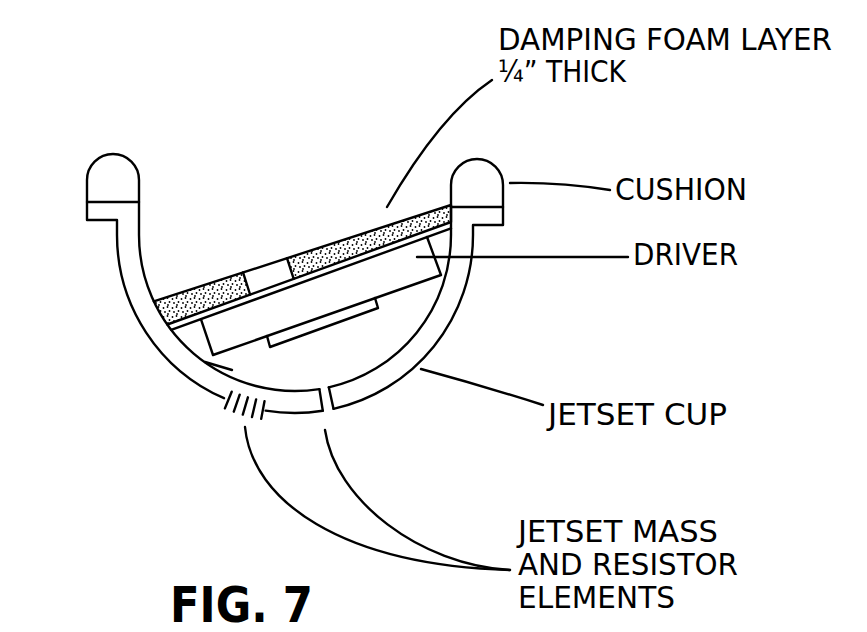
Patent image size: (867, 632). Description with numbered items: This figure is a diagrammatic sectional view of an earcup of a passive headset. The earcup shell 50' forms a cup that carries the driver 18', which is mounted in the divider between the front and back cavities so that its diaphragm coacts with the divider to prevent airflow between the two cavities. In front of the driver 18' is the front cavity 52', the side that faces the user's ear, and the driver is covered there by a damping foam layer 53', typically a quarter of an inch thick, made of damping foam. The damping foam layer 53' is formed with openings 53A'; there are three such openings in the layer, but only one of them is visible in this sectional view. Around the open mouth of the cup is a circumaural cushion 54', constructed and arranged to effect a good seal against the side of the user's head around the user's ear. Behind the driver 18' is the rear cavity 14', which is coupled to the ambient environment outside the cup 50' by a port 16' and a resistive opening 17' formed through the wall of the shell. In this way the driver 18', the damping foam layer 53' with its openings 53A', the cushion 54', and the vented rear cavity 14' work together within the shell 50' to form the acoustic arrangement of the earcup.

The front cavity 52' is at (330, 307).
The circumaural cushion 54' is at (348, 153).
The earcup shell 50' is at (320, 367).
The port 16' is at (395, 451).
The resistive opening 17' is at (197, 462).
The damping foam layer 53' is at (302, 226).
The openings in damping foam layer 53A' is at (257, 225).
The driver 18' is at (419, 296).
The rear cavity 14' is at (127, 391).